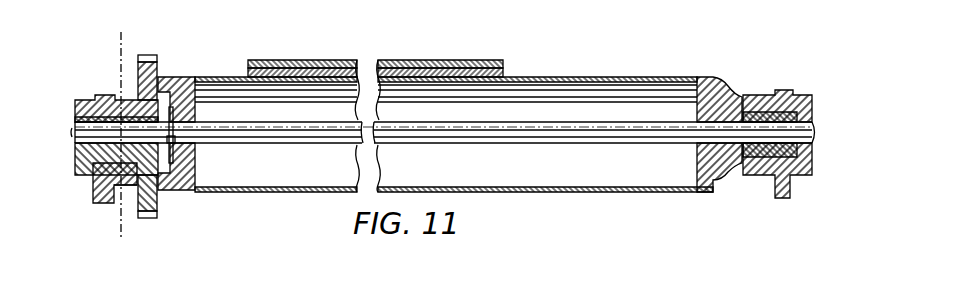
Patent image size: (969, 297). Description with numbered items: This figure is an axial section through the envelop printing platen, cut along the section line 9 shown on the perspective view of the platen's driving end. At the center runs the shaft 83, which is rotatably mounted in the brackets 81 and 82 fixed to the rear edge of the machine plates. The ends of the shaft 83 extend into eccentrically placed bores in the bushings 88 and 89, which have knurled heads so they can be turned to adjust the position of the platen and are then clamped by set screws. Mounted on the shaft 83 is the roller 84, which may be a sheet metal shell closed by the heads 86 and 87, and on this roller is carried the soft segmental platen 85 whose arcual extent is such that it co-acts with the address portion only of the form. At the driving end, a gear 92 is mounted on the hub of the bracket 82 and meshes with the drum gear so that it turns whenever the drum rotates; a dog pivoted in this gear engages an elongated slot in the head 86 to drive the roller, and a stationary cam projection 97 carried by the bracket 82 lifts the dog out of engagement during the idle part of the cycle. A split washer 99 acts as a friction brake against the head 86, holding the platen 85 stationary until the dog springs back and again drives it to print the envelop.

The section line 9— 9 is at (120, 143).
The bracket 81 is at (784, 198).
The bracket 82 is at (108, 204).
The shaft 83 is at (460, 128).
The roller 84 is at (560, 77).
The segmental platen 85 is at (455, 60).
The head 86 is at (195, 172).
The head 87 is at (722, 182).
The bushing 88 is at (76, 104).
The bushing 89 is at (797, 174).
The gear 92 is at (152, 74).
The cam projection 97 is at (128, 198).
The split washer 99 is at (176, 156).